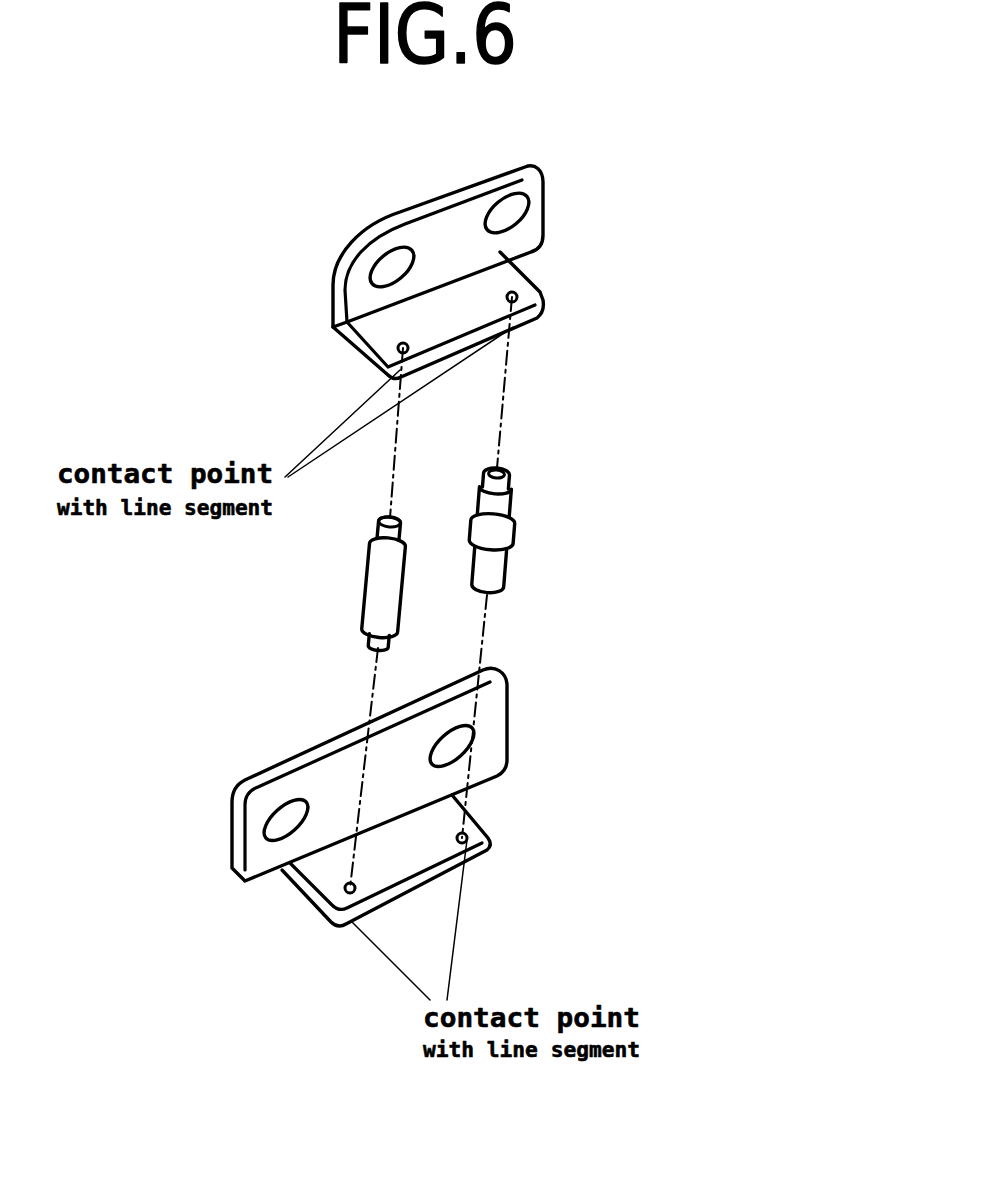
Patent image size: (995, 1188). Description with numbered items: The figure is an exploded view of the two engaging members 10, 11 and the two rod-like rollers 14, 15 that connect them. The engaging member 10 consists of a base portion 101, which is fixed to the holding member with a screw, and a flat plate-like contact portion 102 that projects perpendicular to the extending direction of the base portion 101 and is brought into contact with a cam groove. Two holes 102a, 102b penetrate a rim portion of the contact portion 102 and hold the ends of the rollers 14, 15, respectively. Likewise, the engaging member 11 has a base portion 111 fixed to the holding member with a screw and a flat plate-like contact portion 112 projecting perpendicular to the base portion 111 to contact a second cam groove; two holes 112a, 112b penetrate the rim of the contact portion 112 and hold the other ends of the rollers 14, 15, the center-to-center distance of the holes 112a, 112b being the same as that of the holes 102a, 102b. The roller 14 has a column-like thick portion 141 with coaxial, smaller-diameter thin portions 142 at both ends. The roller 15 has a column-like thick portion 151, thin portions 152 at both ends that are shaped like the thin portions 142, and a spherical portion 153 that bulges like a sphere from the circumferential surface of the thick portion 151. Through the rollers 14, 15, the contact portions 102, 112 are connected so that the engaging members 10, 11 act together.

The engaging member 10 is at (712, 126).
The base portion 101 is at (547, 207).
The contact portion 102 is at (517, 267).
The hole 102a is at (396, 349).
The hole 102b is at (537, 285).
The engaging member 11 is at (680, 633).
The base portion 111 is at (510, 713).
The contact portion 112 is at (473, 817).
The hole 112a is at (317, 898).
The hole 112b is at (468, 838).
The roller 14 is at (198, 538).
The thick portion 141 is at (367, 583).
The thin portion 142 is at (377, 522).
The roller 15 is at (672, 344).
The thick portion 151 is at (510, 493).
The thin portion 152 is at (500, 467).
The spherical portion 153 is at (517, 535).